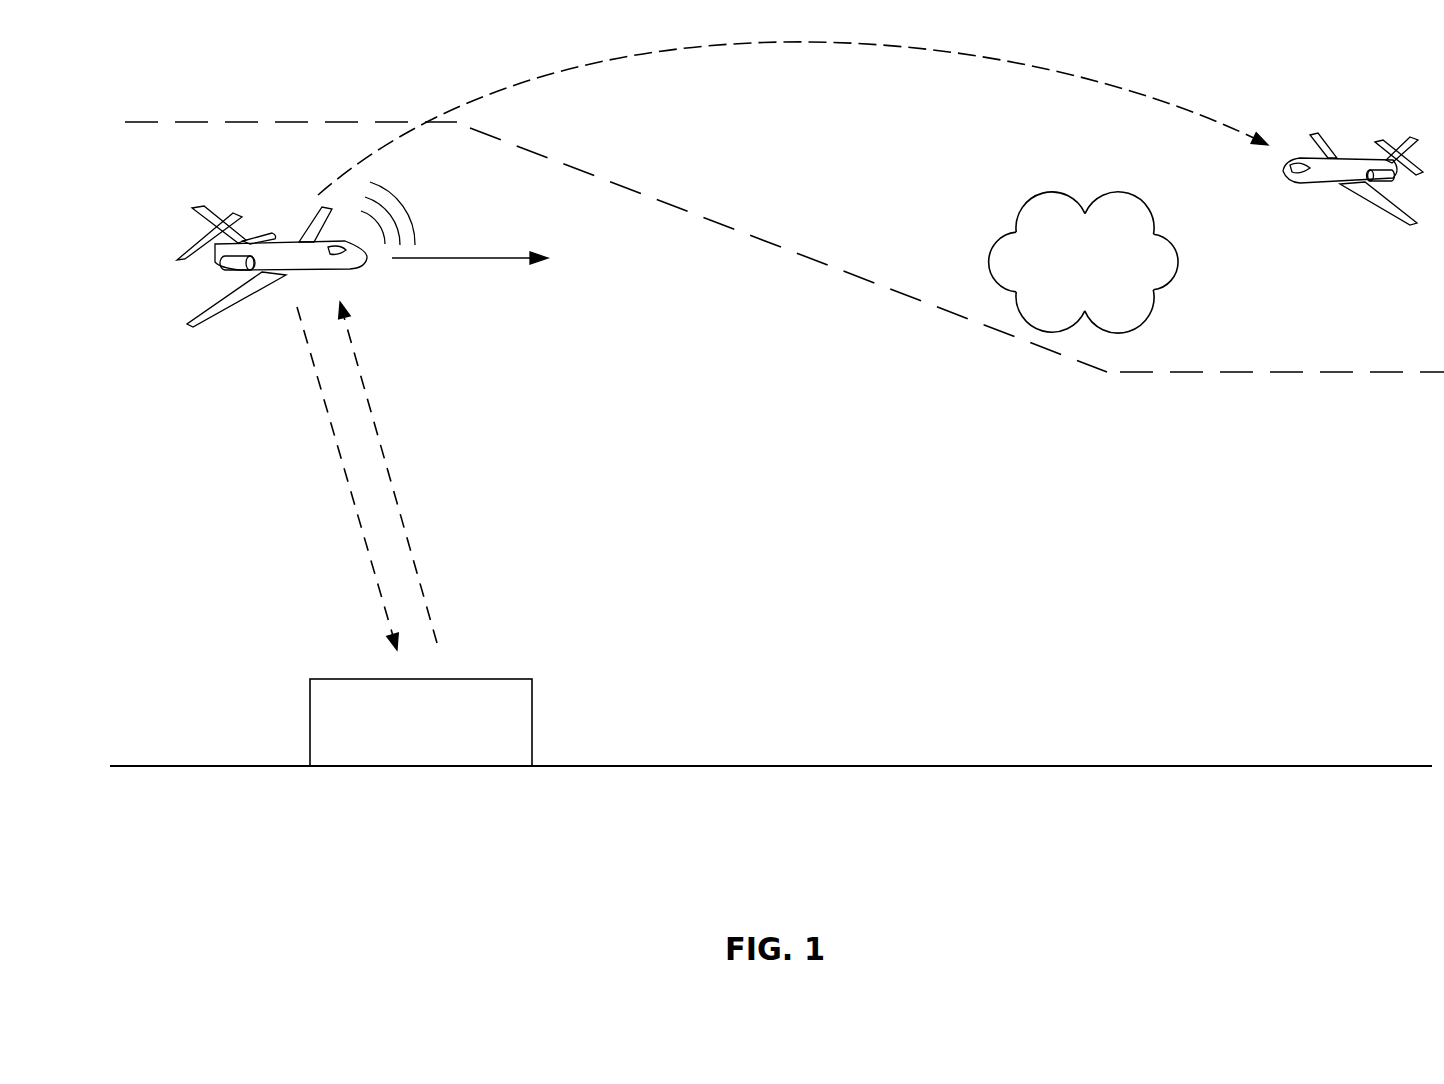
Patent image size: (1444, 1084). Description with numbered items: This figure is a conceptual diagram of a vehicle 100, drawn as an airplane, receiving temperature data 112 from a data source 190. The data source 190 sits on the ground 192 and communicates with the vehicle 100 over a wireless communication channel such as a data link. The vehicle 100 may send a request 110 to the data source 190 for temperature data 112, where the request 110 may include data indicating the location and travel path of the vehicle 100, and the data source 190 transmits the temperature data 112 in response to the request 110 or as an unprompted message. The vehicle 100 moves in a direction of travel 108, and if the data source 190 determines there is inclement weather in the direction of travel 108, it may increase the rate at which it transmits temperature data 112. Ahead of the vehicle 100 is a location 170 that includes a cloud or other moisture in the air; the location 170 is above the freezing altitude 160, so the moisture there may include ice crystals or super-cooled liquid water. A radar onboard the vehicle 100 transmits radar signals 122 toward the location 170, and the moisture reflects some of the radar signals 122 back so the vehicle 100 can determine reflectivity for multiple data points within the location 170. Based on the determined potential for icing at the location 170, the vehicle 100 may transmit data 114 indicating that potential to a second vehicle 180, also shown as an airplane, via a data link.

The vehicle 100 is at (161, 196).
The direction of travel 108 is at (487, 257).
The request 110 is at (370, 552).
The temperature data 112 is at (393, 492).
The data indicating the potential for icing 114 is at (1140, 90).
The radar signals 122 is at (433, 197).
The freezing altitude 160 is at (765, 240).
The location 170 is at (959, 196).
The vehicle 180 is at (1314, 252).
The data source 190 is at (421, 722).
The ground 192 is at (1247, 765).